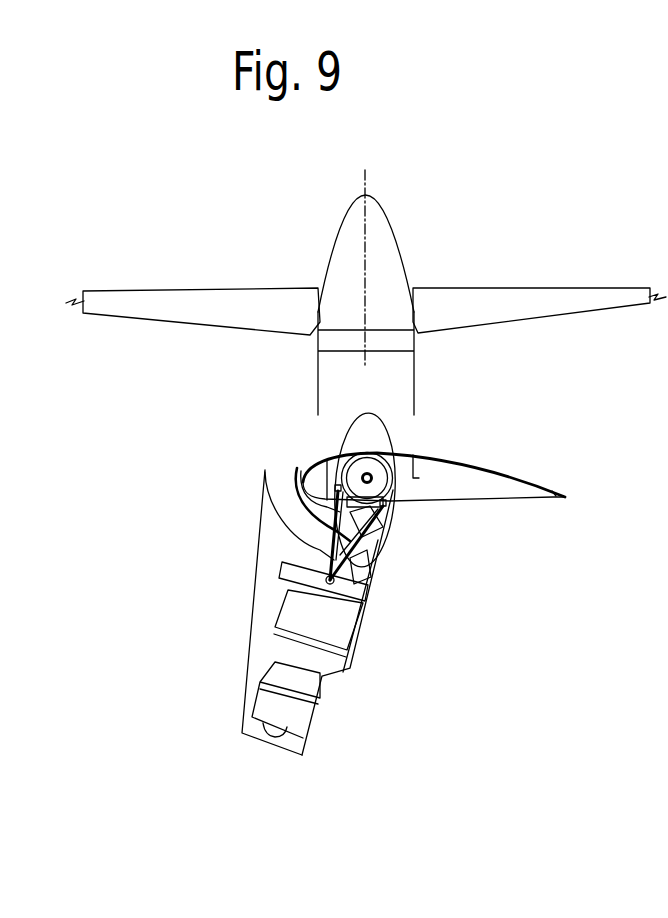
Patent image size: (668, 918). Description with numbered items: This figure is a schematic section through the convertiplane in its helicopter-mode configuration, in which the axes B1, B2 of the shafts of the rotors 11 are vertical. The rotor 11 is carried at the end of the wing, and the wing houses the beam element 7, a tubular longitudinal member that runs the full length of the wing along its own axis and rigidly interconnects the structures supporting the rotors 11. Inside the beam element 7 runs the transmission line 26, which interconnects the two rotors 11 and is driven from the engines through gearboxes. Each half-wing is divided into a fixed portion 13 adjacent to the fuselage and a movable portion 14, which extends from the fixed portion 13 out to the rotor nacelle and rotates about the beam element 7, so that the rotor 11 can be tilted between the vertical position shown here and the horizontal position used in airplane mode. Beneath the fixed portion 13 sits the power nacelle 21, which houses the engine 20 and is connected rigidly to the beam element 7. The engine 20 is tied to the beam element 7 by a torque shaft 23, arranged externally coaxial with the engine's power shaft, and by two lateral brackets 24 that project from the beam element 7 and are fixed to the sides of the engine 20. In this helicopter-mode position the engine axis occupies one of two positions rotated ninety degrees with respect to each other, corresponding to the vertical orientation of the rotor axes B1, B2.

The rotor 11 is at (268, 289).
The beam element 7 is at (393, 448).
The fixed portion 13 is at (503, 472).
The transmission line 26 is at (374, 478).
The torque shaft 23 is at (366, 512).
The lateral bracket 24 is at (370, 542).
The movable portion 14 is at (377, 613).
The power nacelle 21 is at (248, 612).
The engine 20 is at (305, 683).
The axis of rotor shaft B1 is at (437, 266).
The axis of rotor shaft B2 is at (366, 186).